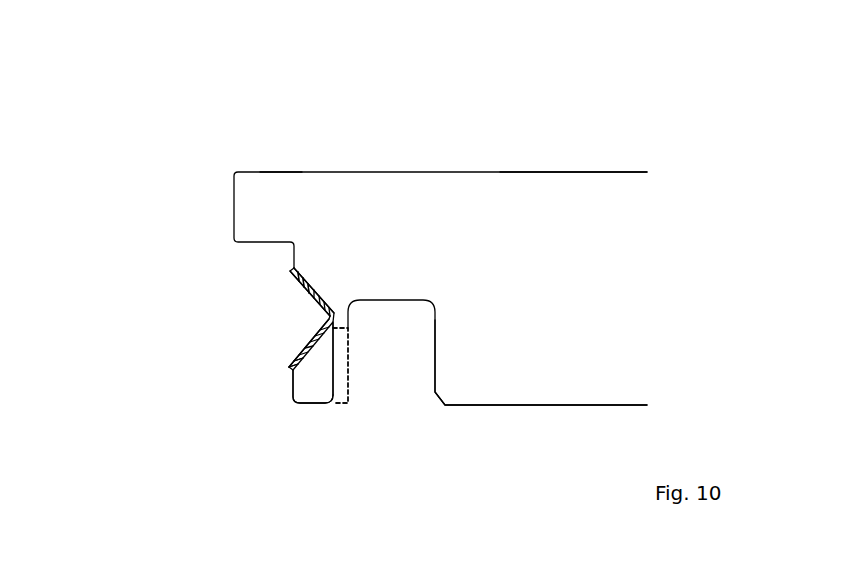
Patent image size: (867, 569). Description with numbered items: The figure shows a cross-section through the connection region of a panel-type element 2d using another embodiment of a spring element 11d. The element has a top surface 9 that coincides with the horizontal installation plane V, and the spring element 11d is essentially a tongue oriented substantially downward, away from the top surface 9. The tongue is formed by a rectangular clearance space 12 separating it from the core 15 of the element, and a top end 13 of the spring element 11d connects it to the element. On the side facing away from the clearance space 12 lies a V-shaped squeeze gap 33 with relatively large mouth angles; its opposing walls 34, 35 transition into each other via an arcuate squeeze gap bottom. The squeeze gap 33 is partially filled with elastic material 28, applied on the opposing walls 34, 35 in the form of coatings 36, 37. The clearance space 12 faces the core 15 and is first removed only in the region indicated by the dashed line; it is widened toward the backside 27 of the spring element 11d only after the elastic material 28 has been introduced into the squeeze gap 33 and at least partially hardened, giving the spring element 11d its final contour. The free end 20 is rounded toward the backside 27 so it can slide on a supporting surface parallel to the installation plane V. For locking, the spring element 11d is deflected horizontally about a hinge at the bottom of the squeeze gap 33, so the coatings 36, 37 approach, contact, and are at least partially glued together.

The top surface 9 is at (368, 167).
The panel 2d is at (447, 189).
The installation plane V is at (302, 170).
The clearance space 12 is at (404, 361).
The core 15 is at (493, 323).
The free end 20 is at (307, 405).
The spring element 11d is at (305, 391).
The backside 27 is at (349, 380).
The top end 13 is at (337, 330).
The squeeze gap 33 is at (299, 332).
The elastic material 28 is at (323, 298).
The wall 34 is at (292, 290).
The coating 36 is at (303, 288).
The coating 37 is at (300, 355).
The wall 35 is at (295, 362).